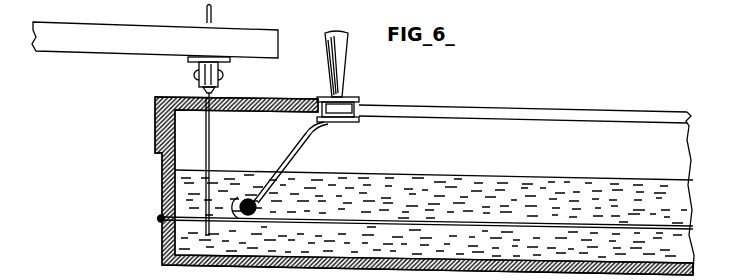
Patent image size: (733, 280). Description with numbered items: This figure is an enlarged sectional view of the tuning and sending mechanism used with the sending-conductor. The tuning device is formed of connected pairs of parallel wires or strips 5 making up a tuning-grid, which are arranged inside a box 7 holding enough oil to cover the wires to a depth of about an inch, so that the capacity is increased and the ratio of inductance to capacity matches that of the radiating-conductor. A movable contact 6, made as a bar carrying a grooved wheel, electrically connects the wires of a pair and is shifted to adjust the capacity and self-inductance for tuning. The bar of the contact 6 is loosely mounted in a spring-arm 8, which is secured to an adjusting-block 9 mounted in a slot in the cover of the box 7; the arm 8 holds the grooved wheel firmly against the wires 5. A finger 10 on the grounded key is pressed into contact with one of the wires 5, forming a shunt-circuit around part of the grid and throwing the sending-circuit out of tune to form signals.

The parallel wires or strips 5 is at (352, 225).
The movable contact 6 is at (241, 201).
The box 7 is at (410, 186).
The spring-arm 8 is at (291, 147).
The adjusting-block 9 is at (345, 107).
The finger 10 is at (210, 160).